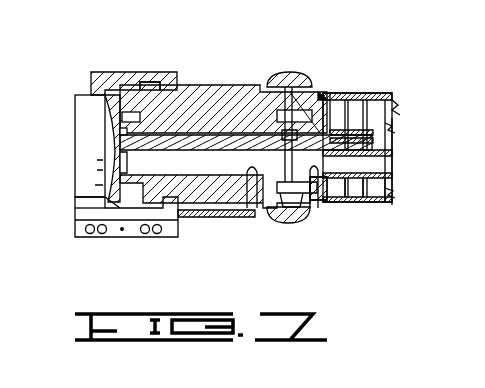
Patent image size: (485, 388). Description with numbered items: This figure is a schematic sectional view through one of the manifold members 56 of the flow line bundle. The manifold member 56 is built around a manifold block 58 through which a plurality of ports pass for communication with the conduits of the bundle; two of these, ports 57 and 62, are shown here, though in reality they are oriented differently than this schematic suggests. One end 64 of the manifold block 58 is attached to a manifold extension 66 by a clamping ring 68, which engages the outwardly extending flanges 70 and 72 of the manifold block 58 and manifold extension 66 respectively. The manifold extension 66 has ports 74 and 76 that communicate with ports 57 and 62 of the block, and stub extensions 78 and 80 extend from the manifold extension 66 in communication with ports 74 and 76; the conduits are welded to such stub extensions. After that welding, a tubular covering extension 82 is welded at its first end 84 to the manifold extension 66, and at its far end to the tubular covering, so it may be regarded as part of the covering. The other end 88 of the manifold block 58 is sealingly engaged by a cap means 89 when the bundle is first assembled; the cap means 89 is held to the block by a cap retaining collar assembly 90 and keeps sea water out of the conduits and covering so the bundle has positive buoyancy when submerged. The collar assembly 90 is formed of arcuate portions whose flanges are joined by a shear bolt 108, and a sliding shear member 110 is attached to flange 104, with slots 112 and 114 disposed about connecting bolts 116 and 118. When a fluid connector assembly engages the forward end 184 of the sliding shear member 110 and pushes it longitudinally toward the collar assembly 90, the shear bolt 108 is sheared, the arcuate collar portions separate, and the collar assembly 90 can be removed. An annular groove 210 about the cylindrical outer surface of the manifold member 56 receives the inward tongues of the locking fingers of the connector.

The manifold member 56 is at (200, 85).
The port 57 is at (226, 130).
The manifold block 58 is at (244, 215).
The port 62 is at (268, 222).
The end of manifold block 64 is at (318, 93).
The manifold extension 66 is at (331, 115).
The clamping ring 68 is at (288, 72).
The flange 70 is at (278, 74).
The flange 72 is at (295, 76).
The port 74 is at (357, 97).
The port 76 is at (321, 208).
The stub extension 78 is at (353, 132).
The stub extension 80 is at (381, 200).
The tubular covering extension 82 is at (368, 200).
The first end of tubular covering extension 84 is at (350, 200).
The end of manifold block 88 is at (97, 98).
The cap means 89 is at (73, 110).
The cap retaining collar assembly 90 is at (112, 72).
The flange 104 is at (95, 205).
The shear bolt 108 is at (120, 233).
The sliding shear member 110 is at (80, 212).
The slot 112 is at (90, 235).
The slot 114 is at (145, 235).
The connecting bolt 116 is at (100, 235).
The connecting bolt 118 is at (160, 235).
The forward end of sliding shear member 184 is at (75, 230).
The annular groove 210 is at (142, 87).